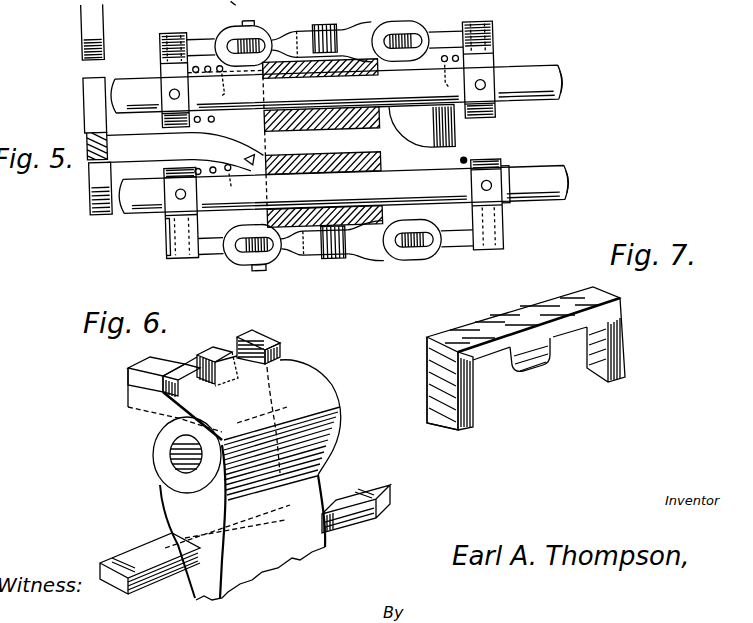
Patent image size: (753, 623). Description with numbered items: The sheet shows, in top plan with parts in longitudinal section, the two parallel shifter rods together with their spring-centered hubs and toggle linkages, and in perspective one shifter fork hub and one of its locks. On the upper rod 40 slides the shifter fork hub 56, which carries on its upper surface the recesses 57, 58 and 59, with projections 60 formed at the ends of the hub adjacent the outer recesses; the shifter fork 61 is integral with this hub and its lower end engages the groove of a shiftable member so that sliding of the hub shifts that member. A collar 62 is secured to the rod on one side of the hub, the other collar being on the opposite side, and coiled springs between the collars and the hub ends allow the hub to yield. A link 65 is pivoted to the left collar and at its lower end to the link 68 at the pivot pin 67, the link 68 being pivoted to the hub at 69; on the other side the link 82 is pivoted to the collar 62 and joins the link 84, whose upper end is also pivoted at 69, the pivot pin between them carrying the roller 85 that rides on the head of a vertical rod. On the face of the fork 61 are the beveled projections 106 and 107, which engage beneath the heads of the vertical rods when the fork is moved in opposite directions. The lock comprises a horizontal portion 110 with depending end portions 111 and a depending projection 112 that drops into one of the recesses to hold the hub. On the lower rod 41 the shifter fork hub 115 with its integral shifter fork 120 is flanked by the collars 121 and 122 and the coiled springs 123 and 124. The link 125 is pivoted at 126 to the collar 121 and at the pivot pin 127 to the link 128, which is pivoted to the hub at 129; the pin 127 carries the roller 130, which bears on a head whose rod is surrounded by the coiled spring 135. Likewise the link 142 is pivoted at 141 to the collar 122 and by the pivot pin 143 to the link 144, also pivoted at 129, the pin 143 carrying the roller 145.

In FIG. 5, the rod 40 is at (552, 86).
In FIG. 5, the rod 41 is at (560, 178).
In FIG. 5, the shifter fork hub 56 is at (312, 130).
In FIG. 6, the shifter fork hub 56 is at (315, 401).
In FIG. 6, the recess 57 is at (168, 354).
In FIG. 6, the recess 58 is at (206, 352).
In FIG. 6, the recess 59 is at (238, 342).
In FIG. 6, the projection 60 is at (148, 385).
In FIG. 5, the shifter fork 61 is at (163, 64).
In FIG. 6, the shifter fork 61 is at (260, 537).
In FIG. 5, the collar 62 is at (497, 62).
In FIG. 5, the link 65 is at (213, 30).
In FIG. 5, the pivot pin 67 is at (254, 28).
In FIG. 5, the link 68 is at (306, 36).
In FIG. 5, the pivot 69 is at (331, 24).
In FIG. 5, the link 82 is at (434, 36).
In FIG. 5, the link 84 is at (366, 32).
In FIG. 5, the roller 85 is at (410, 64).
In FIG. 6, the beveled projection 106 is at (117, 560).
In FIG. 6, the beveled projection 107 is at (350, 496).
In FIG. 7, the horizontal portion 110 is at (468, 329).
In FIG. 7, the depending end portion 111 is at (470, 412).
In FIG. 7, the projection 112 is at (536, 368).
In FIG. 5, the shifter fork hub 115 is at (390, 128).
In FIG. 5, the shifter fork 120 is at (228, 162).
In FIG. 5, the collar 121 is at (165, 216).
In FIG. 5, the collar 122 is at (516, 160).
In FIG. 5, the coiled spring 123 is at (248, 158).
In FIG. 5, the coiled spring 124 is at (463, 161).
In FIG. 5, the link 125 is at (217, 244).
In FIG. 5, the pivot 126 is at (183, 254).
In FIG. 5, the pivot pin 127 is at (270, 264).
In FIG. 5, the link 128 is at (302, 246).
In FIG. 5, the pivot 129 is at (344, 260).
In FIG. 5, the roller 130 is at (253, 250).
In FIG. 5, the coiled spring 135 is at (215, 8).
In FIG. 5, the pivot 141 is at (487, 255).
In FIG. 5, the link 142 is at (462, 250).
In FIG. 5, the pivot pin 143 is at (418, 260).
In FIG. 5, the link 144 is at (398, 262).
In FIG. 5, the roller 145 is at (407, 262).